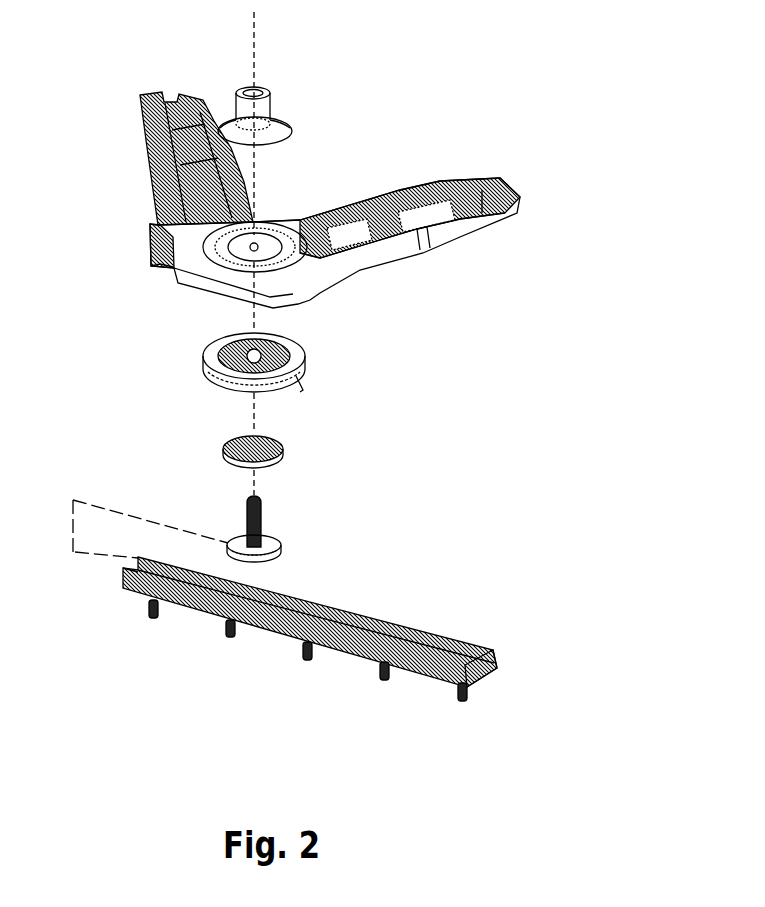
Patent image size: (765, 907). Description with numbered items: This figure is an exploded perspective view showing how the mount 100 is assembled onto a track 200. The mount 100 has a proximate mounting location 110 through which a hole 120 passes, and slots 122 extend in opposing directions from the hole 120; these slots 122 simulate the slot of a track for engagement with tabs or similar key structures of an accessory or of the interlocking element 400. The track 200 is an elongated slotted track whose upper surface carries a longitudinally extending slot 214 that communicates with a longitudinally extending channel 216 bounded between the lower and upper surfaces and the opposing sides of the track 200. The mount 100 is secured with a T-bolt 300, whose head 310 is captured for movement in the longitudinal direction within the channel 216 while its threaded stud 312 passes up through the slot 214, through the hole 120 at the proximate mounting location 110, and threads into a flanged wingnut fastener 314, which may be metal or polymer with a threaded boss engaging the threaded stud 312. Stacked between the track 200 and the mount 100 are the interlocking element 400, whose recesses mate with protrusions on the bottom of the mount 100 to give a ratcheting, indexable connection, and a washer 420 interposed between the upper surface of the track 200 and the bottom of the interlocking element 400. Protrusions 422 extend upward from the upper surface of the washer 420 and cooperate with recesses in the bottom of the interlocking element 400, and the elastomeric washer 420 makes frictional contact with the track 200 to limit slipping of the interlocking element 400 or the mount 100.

The mount 100 is at (412, 67).
The proximate mounting location 110 is at (199, 297).
The hole 120 is at (256, 243).
The slots 122 is at (152, 215).
The track 200 is at (382, 583).
The slot 214 is at (428, 643).
The channel 216 is at (496, 662).
The T-bolt 300 is at (292, 515).
The head 310 is at (229, 534).
The threaded stud 312 is at (245, 500).
The flanged wingnut fastener 314 is at (275, 84).
The interlocking element 400 is at (318, 347).
The washer 420 is at (297, 442).
The protrusions 422 is at (238, 438).